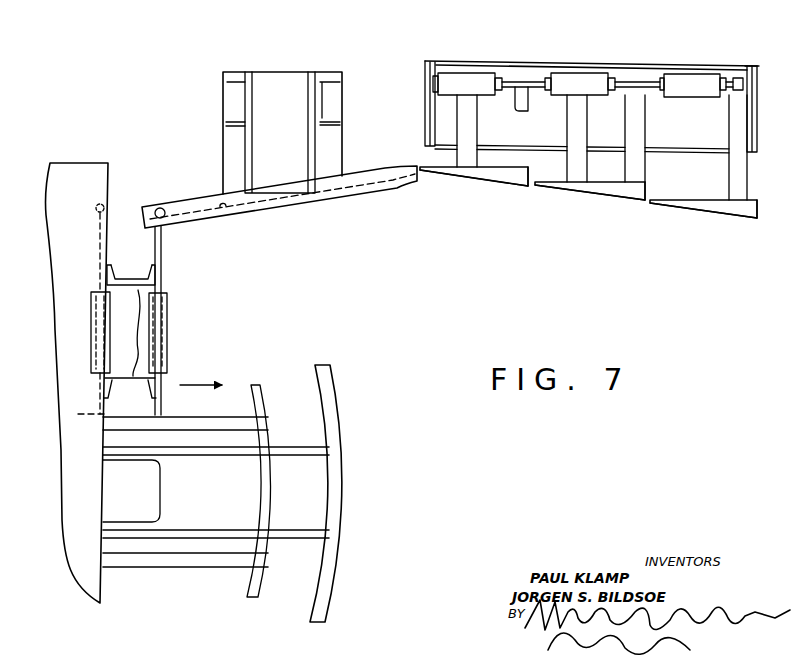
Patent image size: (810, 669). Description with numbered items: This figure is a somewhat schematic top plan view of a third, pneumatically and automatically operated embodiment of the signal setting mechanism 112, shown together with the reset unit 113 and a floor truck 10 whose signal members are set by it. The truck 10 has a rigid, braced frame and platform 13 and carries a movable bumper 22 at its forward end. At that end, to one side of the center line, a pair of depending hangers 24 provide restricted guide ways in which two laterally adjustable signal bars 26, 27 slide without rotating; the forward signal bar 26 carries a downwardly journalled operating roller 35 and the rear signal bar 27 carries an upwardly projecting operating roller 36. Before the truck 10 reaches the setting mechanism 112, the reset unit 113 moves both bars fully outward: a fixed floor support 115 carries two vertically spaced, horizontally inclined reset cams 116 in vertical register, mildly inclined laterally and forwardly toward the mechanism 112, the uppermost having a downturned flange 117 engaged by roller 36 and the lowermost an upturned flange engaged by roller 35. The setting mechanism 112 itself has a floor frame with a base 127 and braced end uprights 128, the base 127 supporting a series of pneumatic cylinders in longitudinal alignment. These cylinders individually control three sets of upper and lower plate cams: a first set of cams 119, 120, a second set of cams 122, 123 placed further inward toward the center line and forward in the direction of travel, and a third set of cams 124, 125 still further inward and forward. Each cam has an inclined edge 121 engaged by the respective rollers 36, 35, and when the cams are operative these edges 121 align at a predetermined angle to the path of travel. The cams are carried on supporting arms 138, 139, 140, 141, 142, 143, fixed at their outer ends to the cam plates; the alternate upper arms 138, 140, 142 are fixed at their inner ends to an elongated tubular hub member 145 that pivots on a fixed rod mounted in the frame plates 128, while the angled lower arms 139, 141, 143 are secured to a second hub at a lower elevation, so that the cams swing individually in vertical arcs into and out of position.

The floor truck 10 is at (99, 158).
The frame and platform 13 is at (107, 191).
The movable bumper 22 is at (340, 437).
The depending brackets or hangers 24 is at (140, 285).
The forward signal bar 26 is at (162, 272).
The rear signal bar 27 is at (101, 241).
The operating roller 35 is at (164, 207).
The operating roller 36 is at (97, 206).
The signal setting mechanism 112 is at (670, 52).
The reset mechanism or unit 113 is at (354, 95).
The floor support 115 is at (225, 100).
The reset cams 116 is at (368, 190).
The downturned flange 117 is at (227, 215).
The upper plate cam 119 is at (522, 187).
The lower plate cam 120 is at (492, 183).
The inclined edges 121 is at (465, 181).
The upper plate cam 122 is at (635, 198).
The lower plate cam 123 is at (568, 186).
The upper plate cam 124 is at (734, 202).
The lower plate cam 125 is at (740, 221).
The base 127 is at (743, 77).
The end uprights 128 is at (425, 128).
The supporting arm 138 is at (473, 132).
The supporting arm 139 is at (523, 95).
The supporting arm 140 is at (573, 130).
The supporting arm 141 is at (649, 113).
The supporting arm 142 is at (690, 118).
The supporting arm 143 is at (734, 98).
The tubular bearing or hub member 145 is at (598, 72).